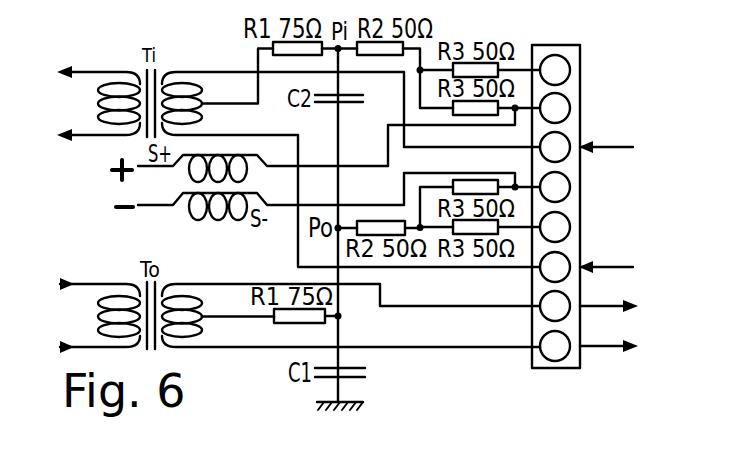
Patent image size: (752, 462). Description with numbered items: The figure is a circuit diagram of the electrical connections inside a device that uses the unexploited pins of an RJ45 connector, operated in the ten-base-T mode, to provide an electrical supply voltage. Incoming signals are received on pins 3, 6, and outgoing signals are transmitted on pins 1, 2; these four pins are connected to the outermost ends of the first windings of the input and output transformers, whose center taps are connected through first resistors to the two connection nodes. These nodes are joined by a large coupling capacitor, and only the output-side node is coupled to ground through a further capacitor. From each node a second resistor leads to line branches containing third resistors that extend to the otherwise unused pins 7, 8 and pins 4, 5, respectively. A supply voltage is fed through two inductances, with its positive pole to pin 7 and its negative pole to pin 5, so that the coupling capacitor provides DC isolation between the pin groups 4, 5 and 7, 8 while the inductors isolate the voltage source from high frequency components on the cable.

The connector pin No. 1 is at (589, 346).
The connector pin No. 2 is at (589, 306).
The connector pin No. 3 is at (586, 267).
The connector pin No. 4 is at (534, 227).
The connector pin No. 5 is at (534, 187).
The connector pin No. 6 is at (586, 147).
The connector pin No. 7 is at (534, 108).
The connector pin No. 8 is at (534, 70).